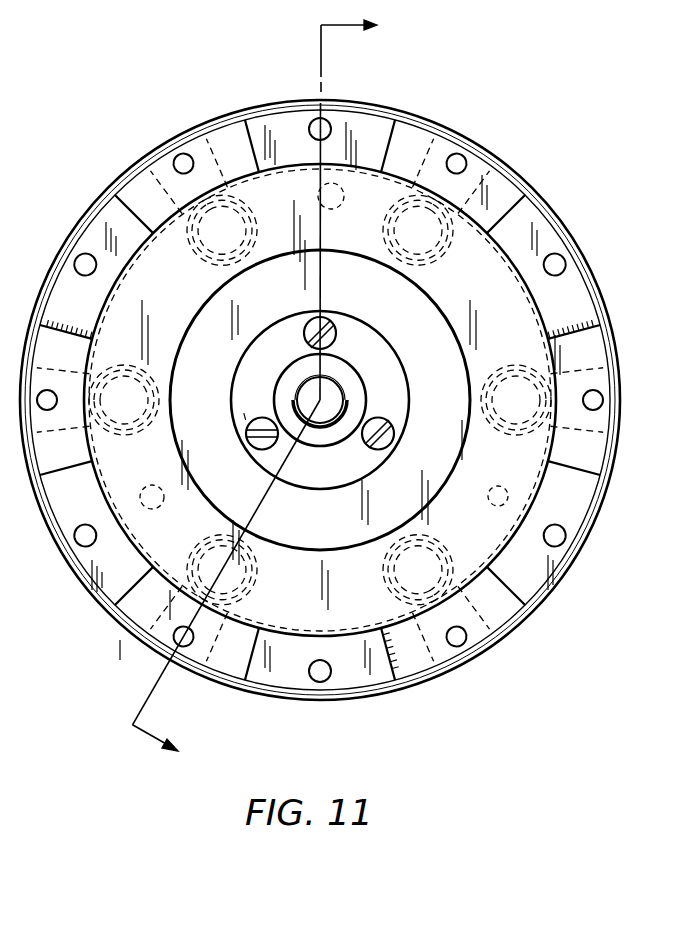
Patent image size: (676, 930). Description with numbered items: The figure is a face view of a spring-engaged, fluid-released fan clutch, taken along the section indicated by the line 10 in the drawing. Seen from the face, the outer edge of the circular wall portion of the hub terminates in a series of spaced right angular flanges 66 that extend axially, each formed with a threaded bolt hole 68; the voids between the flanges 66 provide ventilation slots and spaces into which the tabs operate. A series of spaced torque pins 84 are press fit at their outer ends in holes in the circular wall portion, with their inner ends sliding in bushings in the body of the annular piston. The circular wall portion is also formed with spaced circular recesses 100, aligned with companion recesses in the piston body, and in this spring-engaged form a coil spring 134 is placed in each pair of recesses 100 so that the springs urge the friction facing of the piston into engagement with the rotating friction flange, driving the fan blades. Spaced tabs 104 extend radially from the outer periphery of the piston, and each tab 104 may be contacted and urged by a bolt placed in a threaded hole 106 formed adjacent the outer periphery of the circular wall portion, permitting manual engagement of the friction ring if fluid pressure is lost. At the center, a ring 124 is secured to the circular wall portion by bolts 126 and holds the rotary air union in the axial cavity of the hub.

The section line 10- 10 is at (269, 391).
The right angular flanges 66 is at (371, 140).
The threaded bolt hole 68 is at (326, 124).
The torque pins 84 is at (340, 199).
The circular recesses 100 is at (250, 221).
The tabs 104 is at (152, 175).
The threaded hole 106 is at (186, 163).
The ring 124 is at (279, 354).
The bolts 126 is at (335, 328).
The coil spring 134 is at (192, 235).